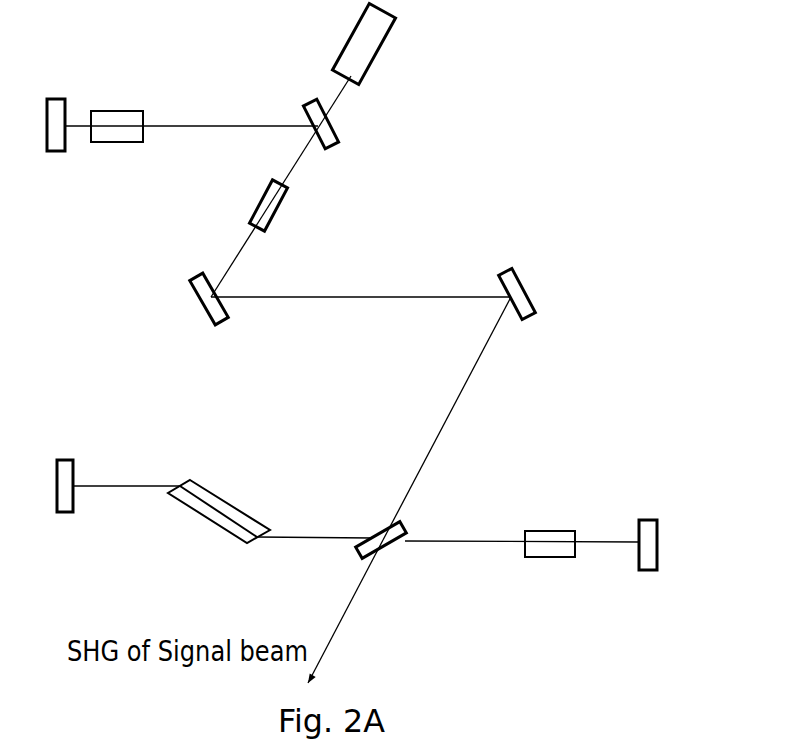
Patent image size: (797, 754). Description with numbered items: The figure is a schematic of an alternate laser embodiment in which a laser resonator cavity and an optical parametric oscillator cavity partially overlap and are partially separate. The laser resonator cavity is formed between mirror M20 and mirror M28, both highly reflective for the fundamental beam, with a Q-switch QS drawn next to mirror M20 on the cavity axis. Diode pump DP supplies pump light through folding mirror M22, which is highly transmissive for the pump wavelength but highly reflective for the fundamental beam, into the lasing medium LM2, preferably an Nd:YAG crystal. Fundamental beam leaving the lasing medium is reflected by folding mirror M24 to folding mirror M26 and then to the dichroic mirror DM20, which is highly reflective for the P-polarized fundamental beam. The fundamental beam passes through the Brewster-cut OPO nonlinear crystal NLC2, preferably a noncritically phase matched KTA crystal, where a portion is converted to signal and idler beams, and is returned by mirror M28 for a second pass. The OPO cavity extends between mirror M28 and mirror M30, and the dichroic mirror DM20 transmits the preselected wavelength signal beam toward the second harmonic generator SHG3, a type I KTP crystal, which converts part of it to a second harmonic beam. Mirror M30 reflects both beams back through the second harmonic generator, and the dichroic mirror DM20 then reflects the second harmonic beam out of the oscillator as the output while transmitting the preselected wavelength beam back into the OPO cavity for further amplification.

The mirror M20 is at (45, 107).
The Q-switch QS is at (117, 103).
The diode pump DP is at (356, 42).
The folding mirror M22 is at (352, 131).
The laser medium LM2 is at (242, 205).
The folding mirror M24 is at (173, 295).
The folding mirror M26 is at (543, 293).
The mirror M28 is at (81, 505).
The nonlinear crystal NLC2 is at (219, 513).
The KTA nonlinear crystal KTA is at (219, 492).
The dichroic mirror DM20 is at (415, 561).
The second harmonic nonlinear crystal SHG3 is at (551, 547).
The KTP second harmonic nonlinear crystal KTP is at (552, 566).
The mirror M30 is at (684, 543).